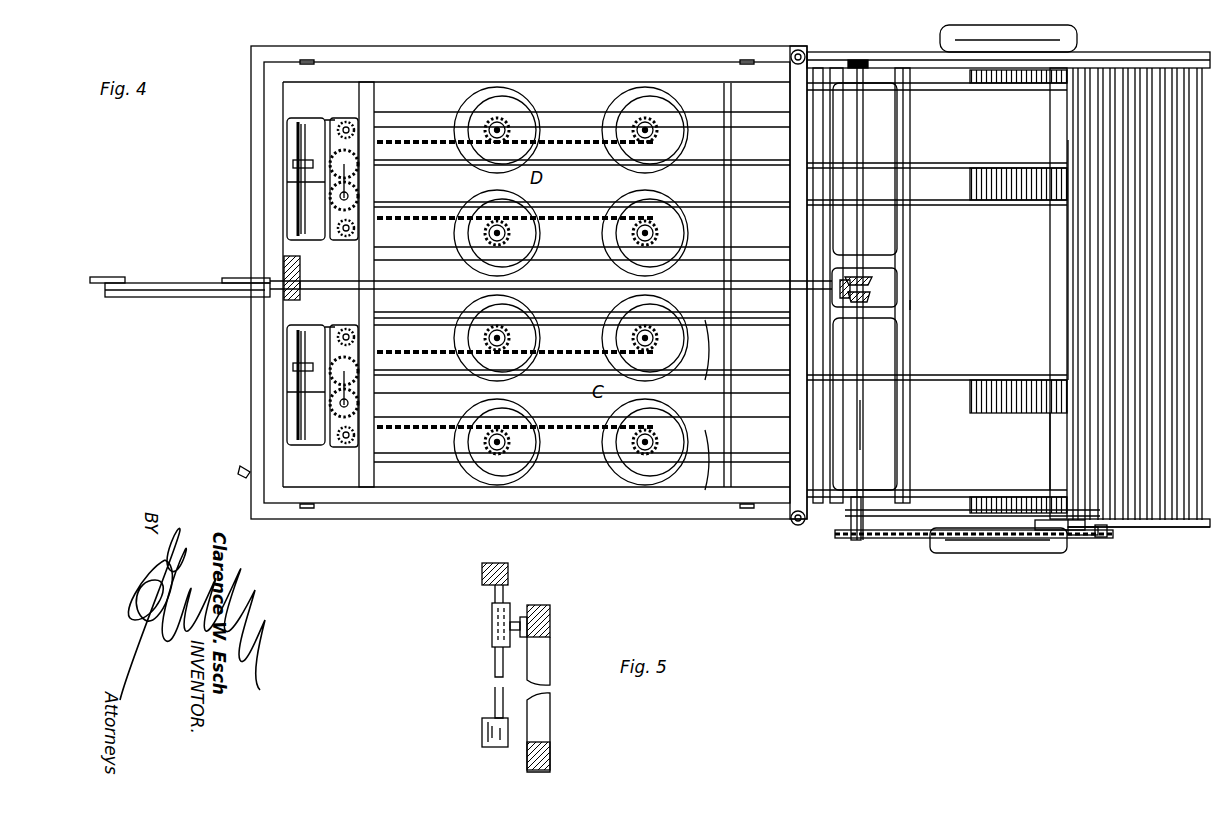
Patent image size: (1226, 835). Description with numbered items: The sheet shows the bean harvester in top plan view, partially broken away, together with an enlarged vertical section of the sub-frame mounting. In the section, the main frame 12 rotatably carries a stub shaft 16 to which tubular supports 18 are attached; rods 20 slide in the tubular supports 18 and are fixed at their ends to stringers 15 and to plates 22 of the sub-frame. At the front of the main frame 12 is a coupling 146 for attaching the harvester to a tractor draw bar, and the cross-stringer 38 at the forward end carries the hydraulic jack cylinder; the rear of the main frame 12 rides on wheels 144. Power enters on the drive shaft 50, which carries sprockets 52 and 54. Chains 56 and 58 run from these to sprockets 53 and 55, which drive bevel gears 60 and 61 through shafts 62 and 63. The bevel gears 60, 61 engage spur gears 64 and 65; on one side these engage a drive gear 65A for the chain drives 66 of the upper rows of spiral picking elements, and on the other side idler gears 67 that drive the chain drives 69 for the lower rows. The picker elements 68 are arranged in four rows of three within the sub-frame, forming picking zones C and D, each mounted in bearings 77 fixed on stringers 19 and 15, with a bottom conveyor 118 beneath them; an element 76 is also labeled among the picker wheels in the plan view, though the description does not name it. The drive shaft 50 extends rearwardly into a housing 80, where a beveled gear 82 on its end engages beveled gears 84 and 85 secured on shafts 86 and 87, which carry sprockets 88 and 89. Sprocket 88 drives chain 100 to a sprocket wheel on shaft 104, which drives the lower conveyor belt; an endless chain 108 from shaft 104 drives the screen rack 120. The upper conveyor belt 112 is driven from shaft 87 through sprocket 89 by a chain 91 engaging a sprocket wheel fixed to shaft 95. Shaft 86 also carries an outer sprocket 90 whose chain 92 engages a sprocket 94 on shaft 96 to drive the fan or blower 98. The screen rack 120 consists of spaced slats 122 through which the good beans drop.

In FIG. 4, the coupling 146 is at (104, 276).
In FIG. 4, the cross-stringer 38 is at (262, 298).
In FIG. 4, the drive shaft 50 is at (398, 284).
In FIG. 4, the sprocket 52 is at (288, 264).
In FIG. 4, the sprocket 54 is at (322, 260).
In FIG. 4, the picker element 68 is at (390, 312).
In FIG. 4, the bevel gear 61 is at (300, 138).
In FIG. 4, the sprocket 55 is at (300, 166).
In FIG. 4, the shaft 63 is at (300, 182).
In FIG. 4, the chain 58 is at (300, 213).
In FIG. 4, the drive gear 65A is at (330, 122).
In FIG. 4, the spur gear 65 is at (350, 128).
In FIG. 4, the idler gear 67 is at (362, 190).
In FIG. 4, the bearing 77 is at (493, 120).
In FIG. 4, the roller 76 is at (672, 215).
In FIG. 4, the chain drive 66 is at (440, 150).
In FIG. 4, the chain drive 69 is at (568, 214).
In FIG. 4, the spur gear 64 is at (362, 386).
In FIG. 4, the chain 56 is at (300, 352).
In FIG. 4, the bevel gear 60 is at (300, 368).
In FIG. 4, the shaft 62 is at (300, 390).
In FIG. 4, the sprocket 53 is at (293, 402).
In FIG. 4, the bottom conveyor 118 is at (726, 160).
In FIG. 4, the stringer 19 is at (706, 428).
In FIG. 4, the beveled gear 82 is at (848, 268).
In FIG. 4, the shaft 87 is at (862, 258).
In FIG. 4, the housing 80 is at (893, 292).
In FIG. 4, the beveled gear 85 is at (872, 282).
In FIG. 4, the beveled gear 84 is at (866, 305).
In FIG. 4, the shaft 86 is at (862, 420).
In FIG. 4, the sprocket 88 is at (857, 510).
In FIG. 4, the sprocket 89 is at (858, 60).
In FIG. 4, the chain 91 is at (910, 64).
In FIG. 4, the shaft 95 is at (1048, 66).
In FIG. 4, the wheel 144 is at (1080, 37).
In FIG. 4, the slat 122 is at (1085, 257).
In FIG. 4, the upper conveyor belt 112 is at (992, 334).
In FIG. 4, the screen rack 120 is at (1108, 340).
In FIG. 4, the fan or blower 98 is at (1055, 444).
In FIG. 4, the chain 100 is at (925, 510).
In FIG. 4, the sprocket 90 is at (848, 537).
In FIG. 4, the chain 92 is at (920, 538).
In FIG. 4, the shaft 104 is at (1040, 540).
In FIG. 4, the endless chain 108 is at (1082, 545).
In FIG. 4, the sprocket 94 is at (1105, 540).
In FIG. 4, the shaft 96 is at (1112, 528).
In FIG. 5, the stringer 15 is at (482, 565).
In FIG. 5, the tubular support 18 is at (492, 612).
In FIG. 5, the stub shaft 16 is at (513, 619).
In FIG. 5, the main frame 12 is at (550, 606).
In FIG. 5, the rod 20 is at (495, 660).
In FIG. 5, the plate 22 is at (482, 725).